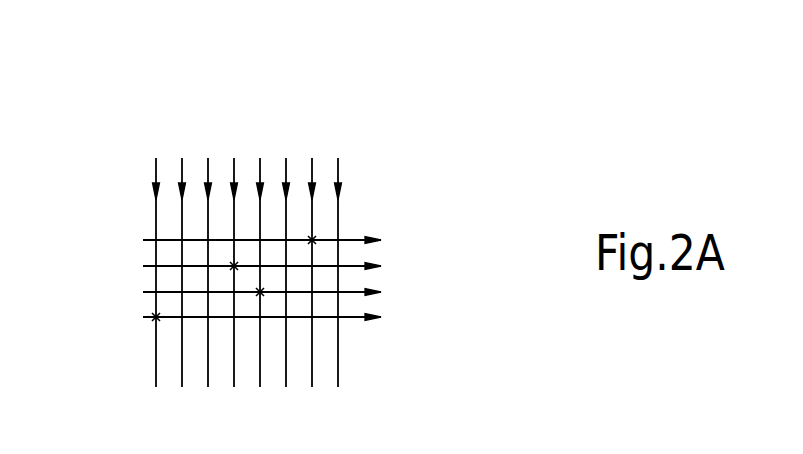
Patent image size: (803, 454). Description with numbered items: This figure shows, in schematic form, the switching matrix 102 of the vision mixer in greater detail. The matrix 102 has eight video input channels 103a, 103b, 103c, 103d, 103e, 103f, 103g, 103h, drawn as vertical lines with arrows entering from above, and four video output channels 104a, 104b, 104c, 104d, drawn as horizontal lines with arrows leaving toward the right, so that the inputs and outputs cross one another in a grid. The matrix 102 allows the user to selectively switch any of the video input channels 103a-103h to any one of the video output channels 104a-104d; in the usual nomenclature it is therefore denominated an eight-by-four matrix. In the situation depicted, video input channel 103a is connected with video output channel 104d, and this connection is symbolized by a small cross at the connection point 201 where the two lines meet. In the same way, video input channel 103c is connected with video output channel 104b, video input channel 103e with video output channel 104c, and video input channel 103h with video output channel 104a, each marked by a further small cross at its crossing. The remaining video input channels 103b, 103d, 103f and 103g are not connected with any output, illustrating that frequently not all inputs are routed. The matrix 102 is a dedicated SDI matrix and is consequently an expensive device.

The matrix 102 is at (276, 193).
The video input channel 103a is at (155, 170).
The video input channel 103b is at (181, 167).
The video input channel 103c is at (207, 163).
The video input channel 103d is at (233, 158).
The video input channel 103e is at (259, 158).
The video input channel 103f is at (285, 160).
The video input channel 103g is at (312, 162).
The video input channel 103h is at (338, 178).
The video output channel 104a is at (383, 241).
The video output channel 104b is at (383, 266).
The video output channel 104c is at (383, 292).
The video output channel 104d is at (383, 317).
The connection point 201 is at (156, 318).